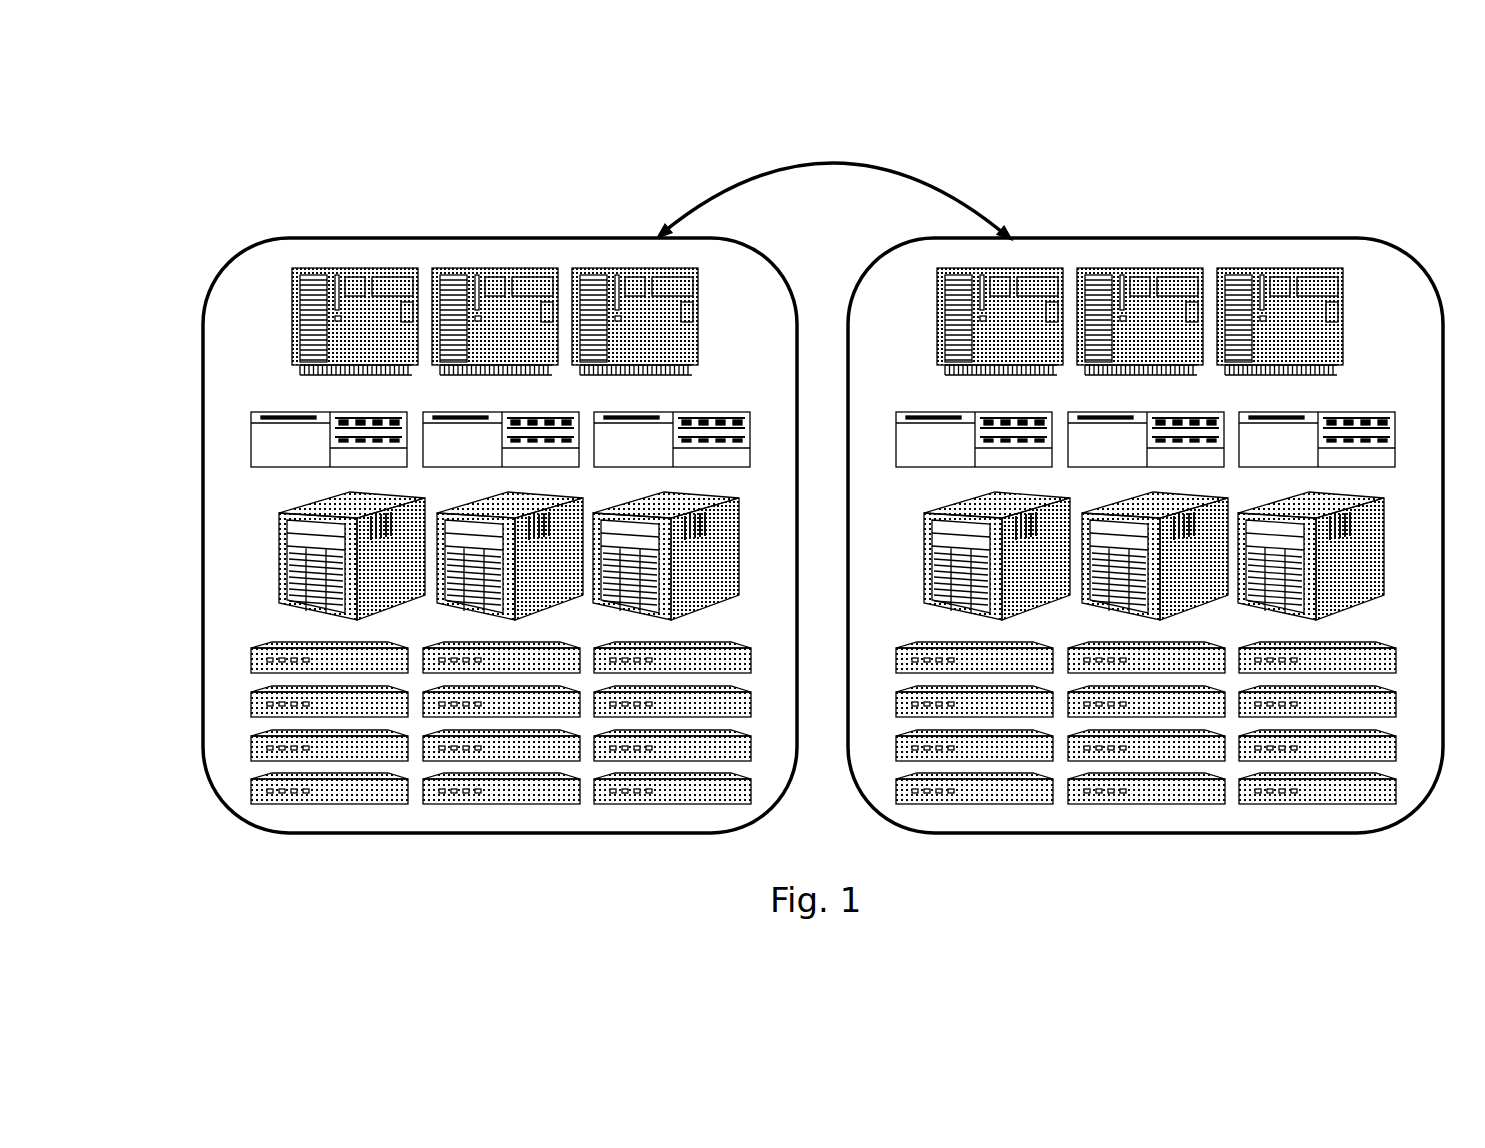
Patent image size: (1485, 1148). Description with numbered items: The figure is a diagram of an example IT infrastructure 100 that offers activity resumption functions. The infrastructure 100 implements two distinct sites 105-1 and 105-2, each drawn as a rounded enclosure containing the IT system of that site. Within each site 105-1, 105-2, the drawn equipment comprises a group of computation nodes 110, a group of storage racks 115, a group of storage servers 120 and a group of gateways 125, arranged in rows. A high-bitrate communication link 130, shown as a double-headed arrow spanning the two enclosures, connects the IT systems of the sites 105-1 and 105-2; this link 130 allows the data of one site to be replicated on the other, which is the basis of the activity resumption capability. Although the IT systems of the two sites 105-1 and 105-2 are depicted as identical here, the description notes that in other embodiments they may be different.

The IT infrastructure 100 is at (291, 133).
The first site 105-1 is at (575, 836).
The second site 105-2 is at (1220, 836).
The computation nodes 110 is at (193, 645).
The storage racks 115 is at (193, 493).
The storage servers 120 is at (193, 412).
The gateways 125 is at (193, 270).
The high-bitrate communication link 130 is at (717, 187).